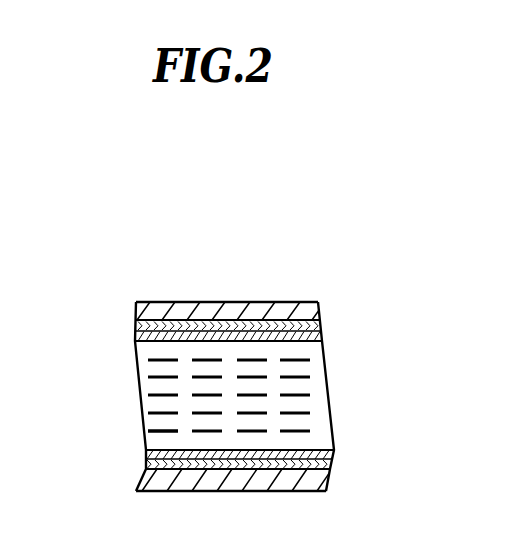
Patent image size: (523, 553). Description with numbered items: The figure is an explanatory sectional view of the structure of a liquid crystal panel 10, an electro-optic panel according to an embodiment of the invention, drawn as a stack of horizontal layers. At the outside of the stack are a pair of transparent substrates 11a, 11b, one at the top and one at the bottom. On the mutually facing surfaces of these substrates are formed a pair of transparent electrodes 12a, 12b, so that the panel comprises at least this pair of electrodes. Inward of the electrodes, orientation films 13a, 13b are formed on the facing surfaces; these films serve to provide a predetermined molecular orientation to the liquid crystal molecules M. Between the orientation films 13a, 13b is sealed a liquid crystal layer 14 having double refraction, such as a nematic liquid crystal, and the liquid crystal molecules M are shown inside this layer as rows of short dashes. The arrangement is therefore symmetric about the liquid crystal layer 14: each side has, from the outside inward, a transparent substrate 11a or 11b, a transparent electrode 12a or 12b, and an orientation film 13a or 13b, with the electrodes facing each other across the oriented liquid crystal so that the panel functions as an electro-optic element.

The liquid crystal panel 10 is at (285, 292).
The transparent substrate 11a is at (313, 310).
The transparent electrode 12a is at (312, 326).
The orientation film 13a is at (312, 334).
The liquid crystal layer 14 is at (343, 343).
The liquid crystal molecules M is at (165, 432).
The orientation film 13b is at (333, 452).
The transparent electrode 12b is at (322, 463).
The transparent substrate 11b is at (320, 482).